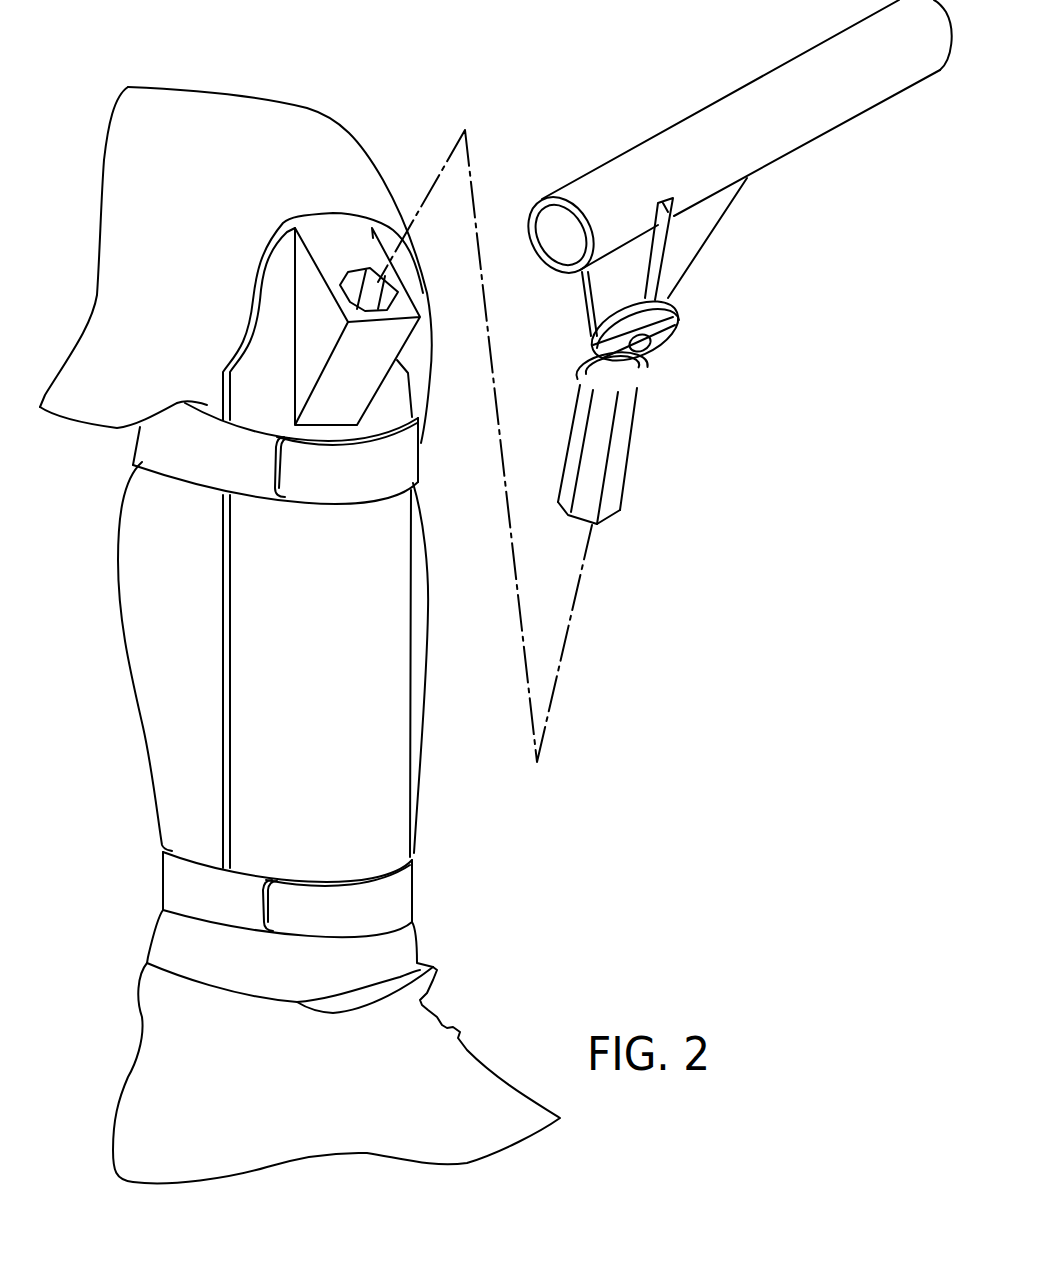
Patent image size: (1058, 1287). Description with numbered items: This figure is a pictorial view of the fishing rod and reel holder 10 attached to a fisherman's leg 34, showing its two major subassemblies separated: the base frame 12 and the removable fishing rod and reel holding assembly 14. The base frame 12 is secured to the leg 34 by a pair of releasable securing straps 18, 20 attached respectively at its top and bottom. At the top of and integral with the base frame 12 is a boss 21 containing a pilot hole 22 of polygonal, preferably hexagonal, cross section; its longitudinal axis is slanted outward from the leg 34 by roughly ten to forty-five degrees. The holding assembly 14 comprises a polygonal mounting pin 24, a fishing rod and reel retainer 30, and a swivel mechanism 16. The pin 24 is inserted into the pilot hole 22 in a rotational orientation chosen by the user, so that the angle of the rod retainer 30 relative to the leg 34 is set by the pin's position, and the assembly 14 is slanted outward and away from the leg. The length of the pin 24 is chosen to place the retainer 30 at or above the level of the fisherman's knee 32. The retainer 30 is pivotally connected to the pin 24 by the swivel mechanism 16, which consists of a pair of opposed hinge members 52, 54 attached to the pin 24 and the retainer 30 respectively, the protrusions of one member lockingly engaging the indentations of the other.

The fishing rod and reel holder 10 is at (229, 273).
The base frame 12 is at (329, 678).
The removable fishing rod and reel holding assembly 14 is at (572, 157).
The swivel mechanism 16 is at (688, 328).
The securing strap 18 is at (427, 446).
The securing strap 20 is at (413, 893).
The boss 21 is at (410, 352).
The pilot hole 22 is at (362, 273).
The polygonal pin 24 is at (630, 470).
The fishing rod and reel retainer 30 is at (650, 143).
The fisherman's knee 32 is at (367, 150).
The fisherman's leg 34 is at (430, 632).
The hinge member 52 is at (660, 360).
The hinge member 54 is at (592, 347).